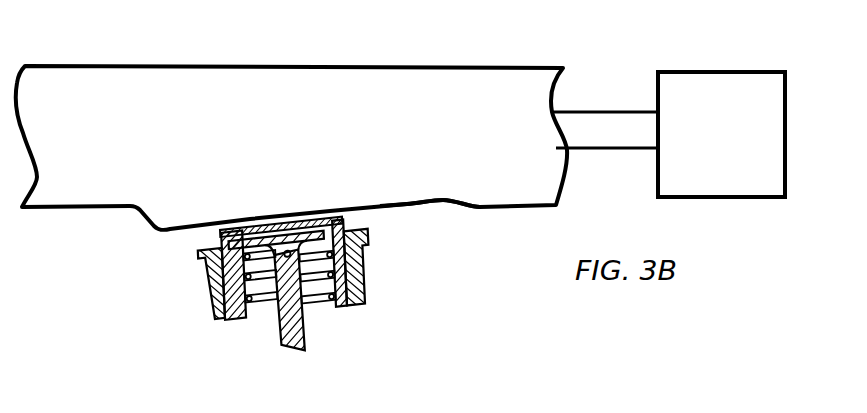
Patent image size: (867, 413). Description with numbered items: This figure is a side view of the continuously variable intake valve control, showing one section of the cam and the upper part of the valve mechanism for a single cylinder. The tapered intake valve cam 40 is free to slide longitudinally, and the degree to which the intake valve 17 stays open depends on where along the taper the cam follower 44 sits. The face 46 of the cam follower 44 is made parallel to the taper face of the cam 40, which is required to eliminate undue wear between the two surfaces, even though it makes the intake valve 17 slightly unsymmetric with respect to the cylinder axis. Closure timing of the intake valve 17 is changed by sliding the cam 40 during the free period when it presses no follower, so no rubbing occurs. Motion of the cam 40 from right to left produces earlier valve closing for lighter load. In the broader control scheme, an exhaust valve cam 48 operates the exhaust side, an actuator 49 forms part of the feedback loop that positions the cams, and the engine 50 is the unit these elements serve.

The tapered intake valve cam 40 is at (291, 148).
The cam follower 44 is at (370, 222).
The face of the cam follower 46 is at (240, 221).
The exhaust valve cam 48 is at (407, 207).
The actuator 49 is at (605, 130).
The engine 50 is at (721, 134).
The intake valve 17 is at (305, 322).